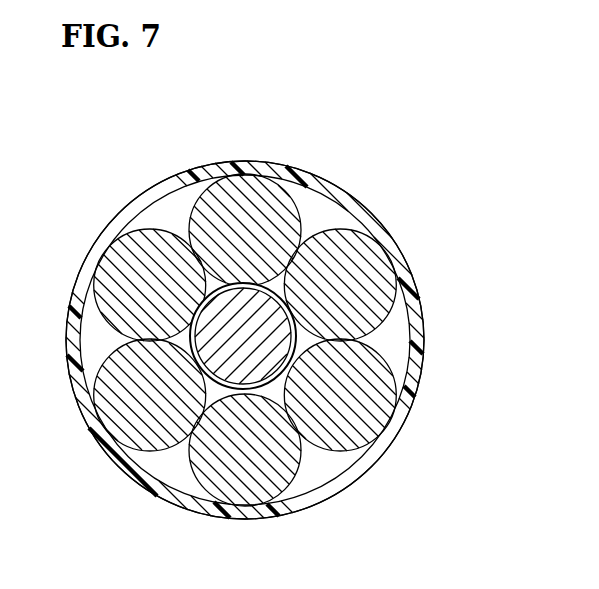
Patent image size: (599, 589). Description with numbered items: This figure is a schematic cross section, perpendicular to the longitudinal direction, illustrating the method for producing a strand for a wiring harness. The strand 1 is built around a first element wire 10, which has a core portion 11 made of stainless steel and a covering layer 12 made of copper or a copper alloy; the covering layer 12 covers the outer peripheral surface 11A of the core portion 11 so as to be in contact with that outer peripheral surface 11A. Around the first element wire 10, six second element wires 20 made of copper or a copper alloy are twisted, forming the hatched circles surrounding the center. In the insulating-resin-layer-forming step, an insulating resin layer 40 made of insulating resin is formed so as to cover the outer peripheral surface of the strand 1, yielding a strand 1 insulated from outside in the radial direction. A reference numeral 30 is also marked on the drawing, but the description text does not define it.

The strand 1 is at (360, 188).
The first element wire 10 is at (341, 336).
The core portion 11 is at (288, 352).
The outer peripheral surface 11A is at (298, 328).
The covering layer 12 is at (263, 352).
The second element wire 20 is at (240, 195).
The wrapping tape 30 is at (120, 238).
The insulating resin layer 40 is at (409, 406).